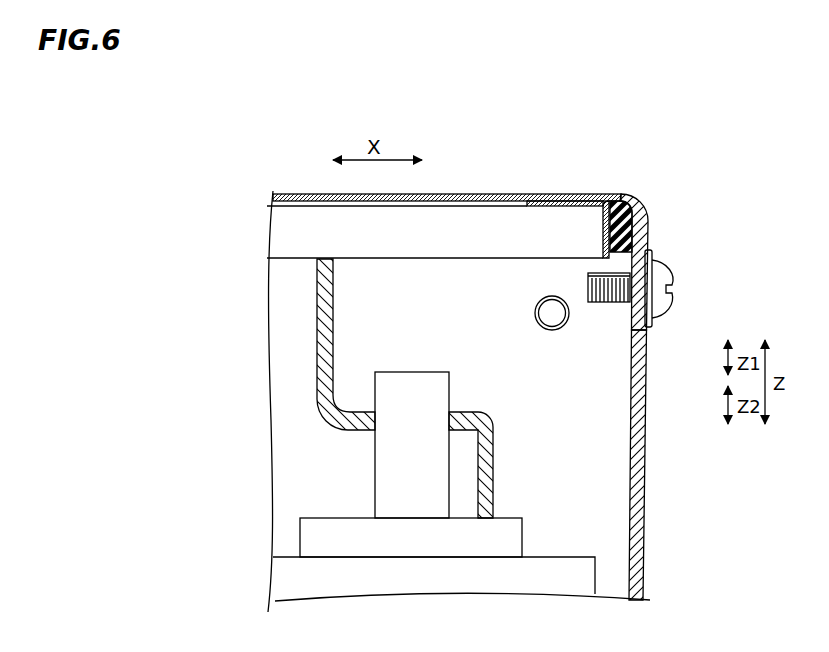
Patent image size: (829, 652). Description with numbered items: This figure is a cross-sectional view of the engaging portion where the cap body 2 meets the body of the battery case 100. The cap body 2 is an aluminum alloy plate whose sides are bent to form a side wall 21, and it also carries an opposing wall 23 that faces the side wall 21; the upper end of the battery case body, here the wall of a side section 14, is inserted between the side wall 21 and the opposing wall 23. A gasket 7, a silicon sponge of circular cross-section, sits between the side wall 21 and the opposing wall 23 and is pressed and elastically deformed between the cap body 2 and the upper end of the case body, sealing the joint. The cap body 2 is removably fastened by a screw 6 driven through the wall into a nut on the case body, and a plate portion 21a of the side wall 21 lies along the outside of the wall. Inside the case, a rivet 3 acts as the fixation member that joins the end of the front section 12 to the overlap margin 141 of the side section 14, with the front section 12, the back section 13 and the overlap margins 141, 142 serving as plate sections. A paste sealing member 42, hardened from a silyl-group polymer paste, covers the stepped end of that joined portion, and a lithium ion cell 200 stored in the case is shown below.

The battery case 100 is at (523, 172).
The cap body 2 is at (466, 189).
The opposing wall 23 is at (603, 240).
The gasket 7 is at (633, 196).
The side wall 21 is at (652, 226).
The side section 14 is at (640, 420).
The frame plate portion 21a is at (646, 325).
The screw 6 is at (655, 303).
The rivet 3 is at (553, 322).
The paste sealing member 42 is at (318, 320).
The overlap margin 141 is at (326, 448).
The overlap margin 142 is at (471, 465).
The front section 12 is at (351, 464).
The back section 13 is at (411, 537).
The lithium ion cell 200 is at (295, 590).